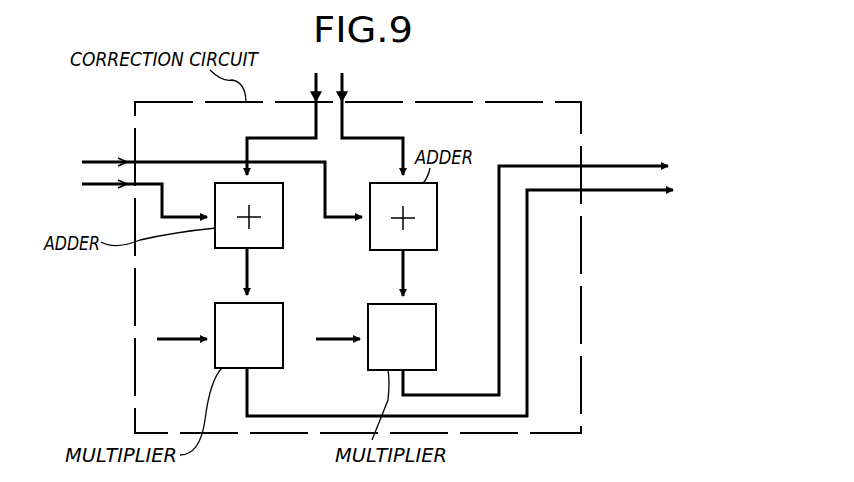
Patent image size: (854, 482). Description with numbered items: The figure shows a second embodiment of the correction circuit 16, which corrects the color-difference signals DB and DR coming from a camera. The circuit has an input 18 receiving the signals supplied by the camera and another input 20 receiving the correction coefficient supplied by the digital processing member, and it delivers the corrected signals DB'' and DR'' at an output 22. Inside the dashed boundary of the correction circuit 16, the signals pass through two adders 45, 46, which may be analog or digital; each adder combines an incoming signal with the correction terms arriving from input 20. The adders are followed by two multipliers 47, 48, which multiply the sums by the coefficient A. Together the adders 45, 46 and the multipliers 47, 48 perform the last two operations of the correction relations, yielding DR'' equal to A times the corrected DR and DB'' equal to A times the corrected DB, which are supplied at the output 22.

The correction circuit 16 is at (491, 104).
The input receiving the camera signal 18 is at (120, 147).
The input receiving the correction coefficient 20 is at (352, 97).
The output 22 is at (593, 155).
The adder 45 is at (437, 237).
The adder 46 is at (283, 237).
The multiplier 47 is at (436, 355).
The multiplier 48 is at (279, 368).